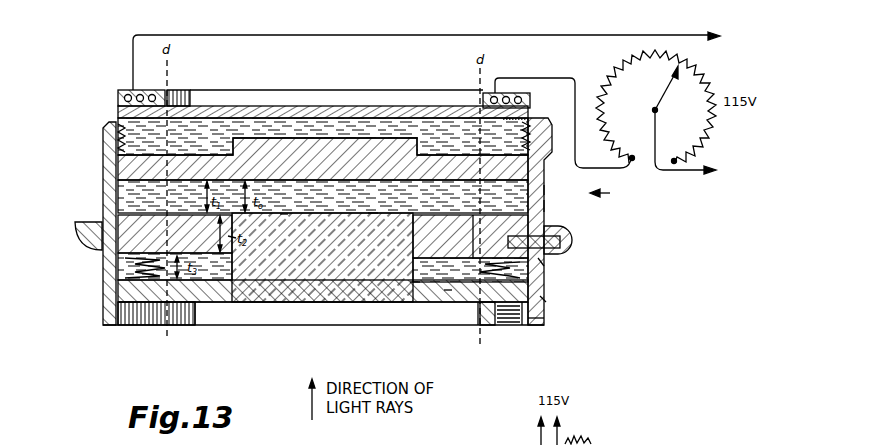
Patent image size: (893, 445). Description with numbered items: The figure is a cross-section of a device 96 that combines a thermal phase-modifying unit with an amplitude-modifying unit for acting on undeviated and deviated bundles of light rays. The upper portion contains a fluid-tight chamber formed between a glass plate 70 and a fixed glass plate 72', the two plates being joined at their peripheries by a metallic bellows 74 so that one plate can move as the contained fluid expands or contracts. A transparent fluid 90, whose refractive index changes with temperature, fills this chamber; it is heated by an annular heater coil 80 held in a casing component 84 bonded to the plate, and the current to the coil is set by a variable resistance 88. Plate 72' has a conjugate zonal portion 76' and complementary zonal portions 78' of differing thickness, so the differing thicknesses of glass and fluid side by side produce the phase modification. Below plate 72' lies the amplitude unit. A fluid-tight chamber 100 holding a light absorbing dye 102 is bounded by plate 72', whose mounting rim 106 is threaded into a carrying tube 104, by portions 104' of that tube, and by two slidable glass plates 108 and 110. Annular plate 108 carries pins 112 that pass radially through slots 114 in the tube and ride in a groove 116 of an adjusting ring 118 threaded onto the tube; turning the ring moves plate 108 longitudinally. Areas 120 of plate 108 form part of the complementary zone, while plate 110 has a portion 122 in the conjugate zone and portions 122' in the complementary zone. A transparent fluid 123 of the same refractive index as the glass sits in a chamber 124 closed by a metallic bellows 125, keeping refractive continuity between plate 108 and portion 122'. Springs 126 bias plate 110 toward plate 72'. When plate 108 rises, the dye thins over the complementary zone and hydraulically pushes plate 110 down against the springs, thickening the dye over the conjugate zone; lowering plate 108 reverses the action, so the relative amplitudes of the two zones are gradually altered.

The glass plate 70 is at (319, 112).
The glass plate 72' is at (323, 159).
The metallic bellows 74 is at (537, 142).
The conjugate zonal portion 76' is at (312, 108).
The complementary zonal portion 78' is at (318, 106).
The annular heater coil 80 is at (517, 95).
The casing component 84 is at (486, 100).
The variable resistance 88 is at (613, 50).
The transparent fluid 90 is at (314, 135).
The device 96 is at (609, 193).
The fluid-tight chamber 100 is at (283, 216).
The light absorbing dye 102 is at (324, 205).
The carrying tube 104 is at (350, 291).
The carrying tube portions 104' is at (565, 203).
The mounting rim 106 is at (546, 190).
The glass plate 108 is at (207, 238).
The glass plate 110 is at (340, 264).
The pin 112 is at (544, 264).
The slot 114 is at (548, 228).
The groove 116 is at (572, 250).
The adjusting ring 118 is at (571, 244).
The areas of plate 120 is at (185, 218).
The conjugate zone portion 122 is at (360, 283).
The complementary zone portions 122' is at (439, 322).
The transparent fluid 123 is at (452, 278).
The chamber 124 is at (415, 284).
The metallic bellows 125 is at (546, 300).
The spring member 126 is at (526, 328).